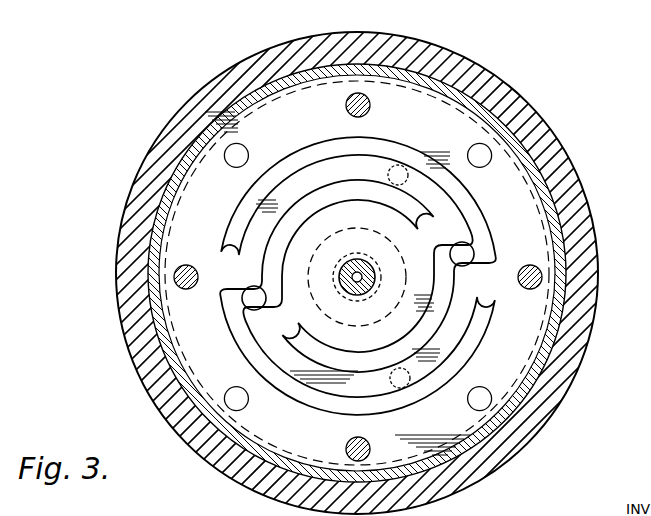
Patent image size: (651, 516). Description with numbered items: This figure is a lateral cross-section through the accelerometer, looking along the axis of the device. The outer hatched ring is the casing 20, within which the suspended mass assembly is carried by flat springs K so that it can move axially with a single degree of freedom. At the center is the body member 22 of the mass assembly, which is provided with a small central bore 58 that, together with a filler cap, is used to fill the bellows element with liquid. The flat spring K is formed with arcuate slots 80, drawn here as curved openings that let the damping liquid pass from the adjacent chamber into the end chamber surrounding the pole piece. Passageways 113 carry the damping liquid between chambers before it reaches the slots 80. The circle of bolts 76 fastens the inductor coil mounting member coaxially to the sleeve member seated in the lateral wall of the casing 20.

The casing 20 is at (497, 80).
The bolts 76 is at (371, 106).
The arcuate slots 80 is at (298, 182).
The passageways 113 is at (470, 252).
The small central bore 58 is at (360, 276).
The body member 22 is at (345, 283).
The flat springs K is at (316, 240).